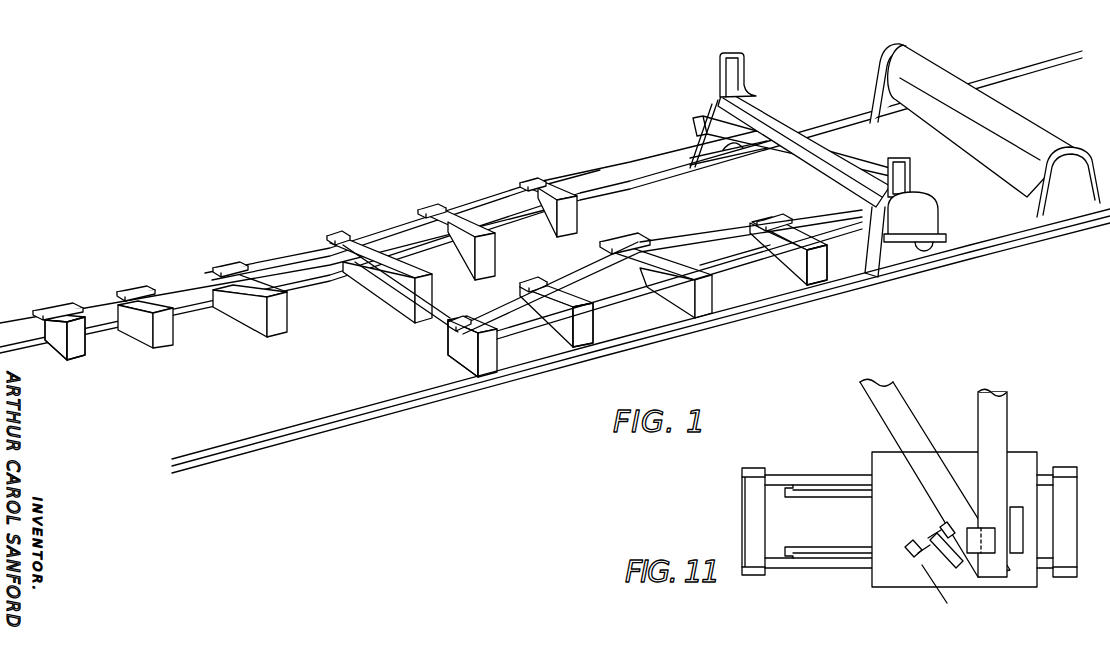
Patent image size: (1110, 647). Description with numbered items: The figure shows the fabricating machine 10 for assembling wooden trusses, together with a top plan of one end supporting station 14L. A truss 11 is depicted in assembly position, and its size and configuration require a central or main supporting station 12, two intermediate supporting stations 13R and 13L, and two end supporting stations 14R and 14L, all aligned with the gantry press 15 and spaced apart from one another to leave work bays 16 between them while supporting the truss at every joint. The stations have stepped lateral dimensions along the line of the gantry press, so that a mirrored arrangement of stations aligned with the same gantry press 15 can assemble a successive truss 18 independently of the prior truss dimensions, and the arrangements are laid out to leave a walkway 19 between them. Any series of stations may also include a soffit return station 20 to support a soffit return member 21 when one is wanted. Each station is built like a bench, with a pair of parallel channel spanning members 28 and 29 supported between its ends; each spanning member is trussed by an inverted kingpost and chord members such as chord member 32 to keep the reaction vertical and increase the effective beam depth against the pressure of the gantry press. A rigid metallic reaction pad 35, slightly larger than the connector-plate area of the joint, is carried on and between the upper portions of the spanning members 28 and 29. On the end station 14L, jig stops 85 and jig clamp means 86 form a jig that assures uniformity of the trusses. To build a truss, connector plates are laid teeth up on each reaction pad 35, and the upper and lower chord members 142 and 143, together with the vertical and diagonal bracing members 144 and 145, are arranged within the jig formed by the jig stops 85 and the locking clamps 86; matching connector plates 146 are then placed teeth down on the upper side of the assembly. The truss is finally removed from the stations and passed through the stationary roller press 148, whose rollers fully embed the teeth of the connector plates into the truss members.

In FIG. 1, the fabricating machine 10 is at (607, 76).
In FIG. 1, the truss 11 is at (708, 224).
In FIG. 1, the main supporting station 12 is at (714, 300).
In FIG. 1, the intermediate supporting station 13L is at (583, 343).
In FIG. 1, the intermediate supporting station 13R is at (792, 266).
In FIG. 1, the end supporting station 14L is at (490, 376).
In FIG. 11, the end supporting station 14L is at (742, 512).
In FIG. 1, the end supporting station 14R is at (868, 262).
In FIG. 1, the gantry press 15 is at (752, 100).
In FIG. 1, the work bays 16 is at (537, 357).
In FIG. 1, the successive truss 18 is at (315, 284).
In FIG. 1, the walkway 19 is at (555, 267).
In FIG. 1, the soffit return station 20 is at (55, 360).
In FIG. 1, the soffit return member 21 is at (70, 308).
In FIG. 11, the spanning member 28 is at (812, 566).
In FIG. 11, the spanning member 29 is at (814, 482).
In FIG. 11, the chord member 32 is at (824, 549).
In FIG. 1, the reaction pad 35 is at (615, 240).
In FIG. 11, the reaction pad 35 is at (887, 474).
In FIG. 11, the jig stop 85 is at (1020, 556).
In FIG. 1, the jig clamp means 86 is at (466, 320).
In FIG. 11, the jig clamp means 86 is at (925, 566).
In FIG. 1, the upper chord member 142 is at (583, 273).
In FIG. 11, the upper chord member 142 is at (912, 436).
In FIG. 1, the lower chord member 143 is at (607, 302).
In FIG. 11, the lower chord member 143 is at (1002, 448).
In FIG. 1, the vertical bracing member 144 is at (668, 256).
In FIG. 1, the diagonal bracing member 145 is at (745, 250).
In FIG. 11, the connector plate 146 is at (975, 535).
In FIG. 1, the stationary roller press 148 is at (882, 76).